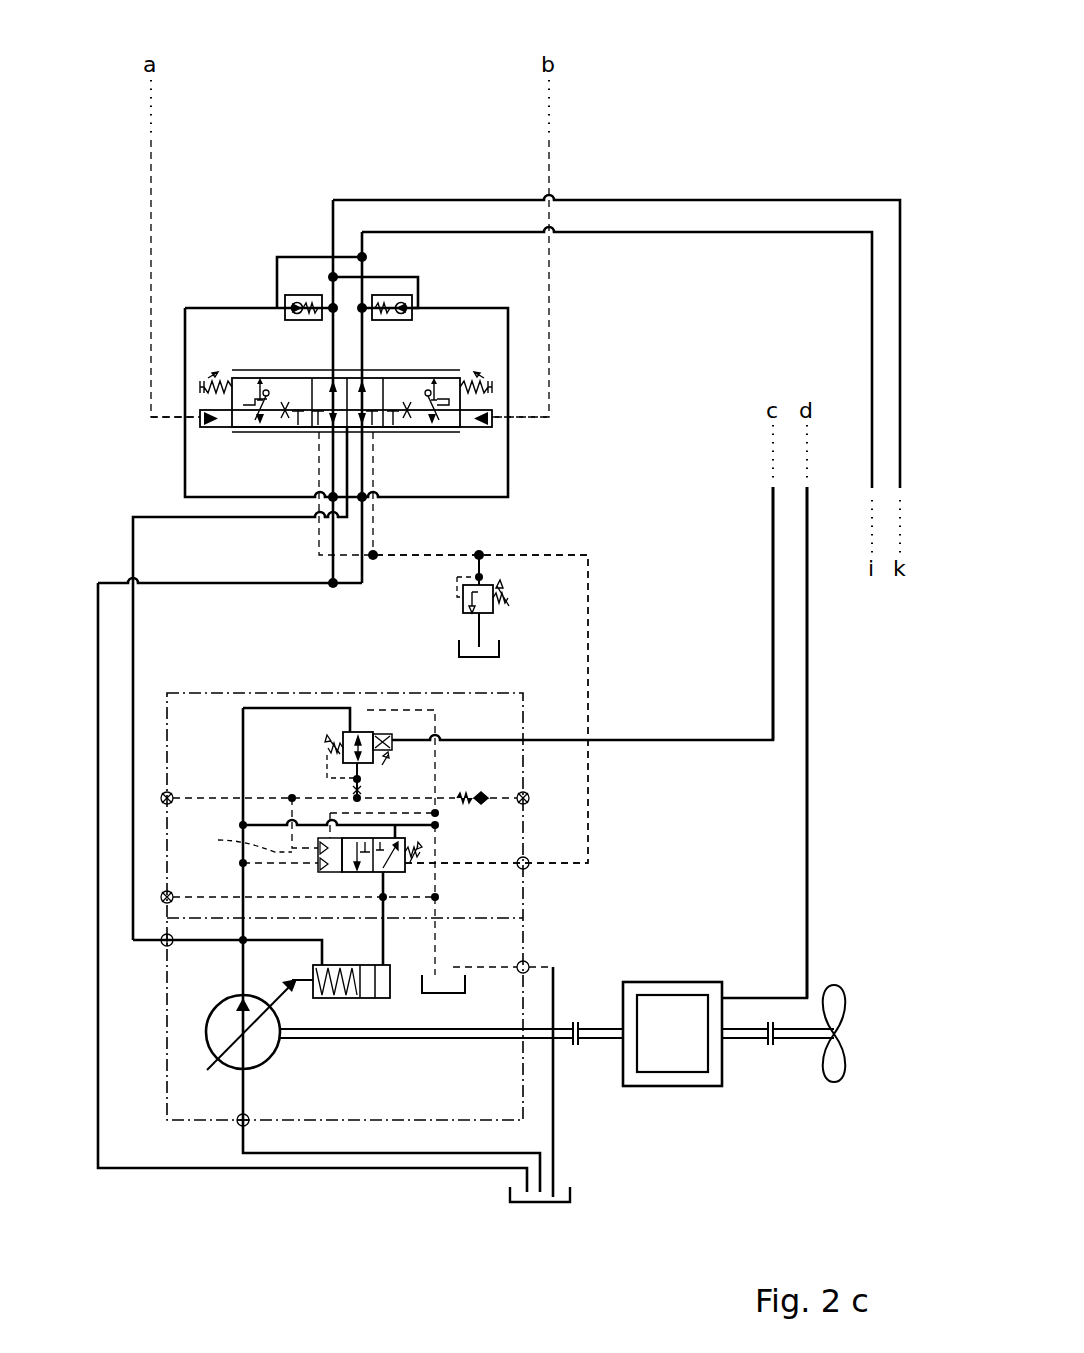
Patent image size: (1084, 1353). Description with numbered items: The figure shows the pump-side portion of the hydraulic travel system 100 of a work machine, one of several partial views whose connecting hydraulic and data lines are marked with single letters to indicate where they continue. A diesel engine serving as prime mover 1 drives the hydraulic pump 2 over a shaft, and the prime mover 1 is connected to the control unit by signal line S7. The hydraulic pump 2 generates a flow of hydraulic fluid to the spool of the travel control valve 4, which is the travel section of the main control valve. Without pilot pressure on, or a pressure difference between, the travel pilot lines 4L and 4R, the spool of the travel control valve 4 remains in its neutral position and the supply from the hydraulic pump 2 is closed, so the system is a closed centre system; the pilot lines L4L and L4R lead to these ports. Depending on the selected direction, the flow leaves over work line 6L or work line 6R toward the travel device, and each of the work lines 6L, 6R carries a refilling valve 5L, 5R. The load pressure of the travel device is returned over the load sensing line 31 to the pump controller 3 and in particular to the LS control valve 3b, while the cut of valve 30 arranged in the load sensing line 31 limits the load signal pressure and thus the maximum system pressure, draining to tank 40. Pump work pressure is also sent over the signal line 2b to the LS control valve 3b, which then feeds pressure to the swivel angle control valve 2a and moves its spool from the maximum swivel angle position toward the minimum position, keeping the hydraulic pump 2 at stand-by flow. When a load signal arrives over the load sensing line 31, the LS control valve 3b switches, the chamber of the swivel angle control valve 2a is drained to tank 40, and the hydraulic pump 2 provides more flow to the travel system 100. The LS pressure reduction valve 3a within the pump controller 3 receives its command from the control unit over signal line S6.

The hydraulic travel system 100 is at (813, 158).
The prime mover 1 is at (676, 981).
The hydraulic pump 2 is at (270, 1062).
The swivel angle control valve 2a is at (343, 999).
The signal line 2b is at (240, 838).
The pump controller 3 is at (279, 690).
The LS pressure reduction valve 3a is at (355, 731).
The LS control valve 3b is at (408, 866).
The travel control valve 4 is at (453, 367).
The travel pilot line 4L is at (188, 420).
The travel pilot line 4R is at (506, 420).
The refilling valve 5L is at (385, 295).
The refilling valve 5R is at (294, 295).
The work line 6L is at (731, 199).
The work line 6R is at (731, 233).
The left pilot line L4L is at (549, 170).
The right pilot line L4R is at (152, 196).
The cut of valve 30 is at (458, 600).
The load sensing line 31 is at (588, 671).
The tank 40 is at (470, 660).
The signal line S6 is at (773, 607).
The signal line S7 is at (807, 795).